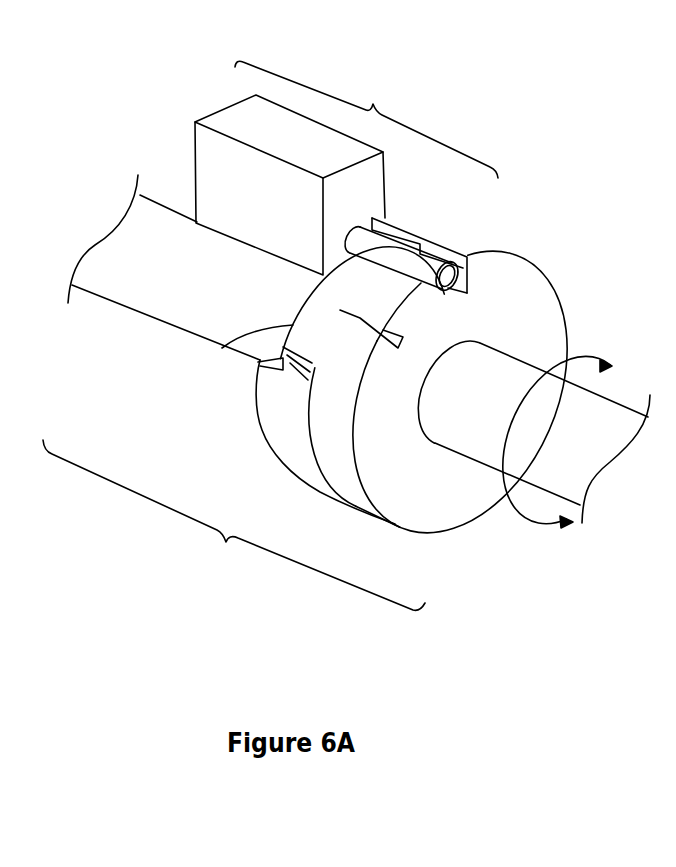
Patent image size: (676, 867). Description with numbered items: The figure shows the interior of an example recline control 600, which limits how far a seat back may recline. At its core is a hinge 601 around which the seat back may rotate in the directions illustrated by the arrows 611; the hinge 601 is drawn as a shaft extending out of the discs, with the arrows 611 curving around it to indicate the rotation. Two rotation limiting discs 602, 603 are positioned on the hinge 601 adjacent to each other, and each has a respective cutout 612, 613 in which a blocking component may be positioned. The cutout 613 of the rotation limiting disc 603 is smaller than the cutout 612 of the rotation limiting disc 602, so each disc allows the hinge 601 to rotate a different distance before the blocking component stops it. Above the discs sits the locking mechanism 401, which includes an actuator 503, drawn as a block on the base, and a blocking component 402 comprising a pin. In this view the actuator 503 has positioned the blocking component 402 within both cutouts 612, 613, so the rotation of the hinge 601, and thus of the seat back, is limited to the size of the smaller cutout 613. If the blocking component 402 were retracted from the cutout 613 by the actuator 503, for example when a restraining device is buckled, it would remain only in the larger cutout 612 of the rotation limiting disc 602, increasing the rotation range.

The locking mechanism 401 is at (366, 177).
The blocking component 402 is at (403, 253).
The actuator 503 is at (202, 135).
The recline control 600 is at (234, 525).
The hinge 601 is at (125, 283).
The rotation limiting disc 602 is at (270, 405).
The rotation limiting disc 603 is at (360, 500).
The arrows 611 is at (538, 526).
The cutout 612 is at (222, 348).
The cutout 613 is at (423, 298).